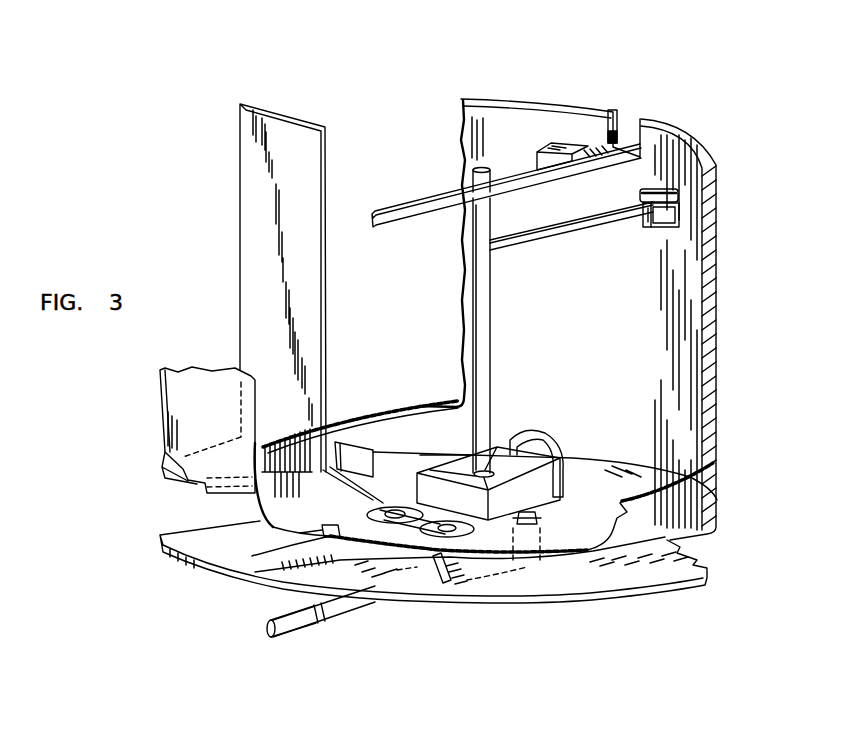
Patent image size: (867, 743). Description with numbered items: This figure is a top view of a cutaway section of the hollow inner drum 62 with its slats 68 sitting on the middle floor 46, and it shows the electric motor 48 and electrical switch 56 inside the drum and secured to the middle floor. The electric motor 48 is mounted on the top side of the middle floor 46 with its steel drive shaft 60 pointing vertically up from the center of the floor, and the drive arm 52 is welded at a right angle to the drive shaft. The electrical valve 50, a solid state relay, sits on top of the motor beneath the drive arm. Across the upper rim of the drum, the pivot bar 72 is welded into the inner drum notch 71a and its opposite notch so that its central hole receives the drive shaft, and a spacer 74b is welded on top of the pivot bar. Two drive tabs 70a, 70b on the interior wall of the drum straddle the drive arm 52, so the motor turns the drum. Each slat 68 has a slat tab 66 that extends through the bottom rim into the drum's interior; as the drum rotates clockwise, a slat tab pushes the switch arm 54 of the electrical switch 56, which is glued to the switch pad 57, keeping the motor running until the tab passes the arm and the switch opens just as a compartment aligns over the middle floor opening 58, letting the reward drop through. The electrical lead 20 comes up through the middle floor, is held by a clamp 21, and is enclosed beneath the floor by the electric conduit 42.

The electrical lead 20 is at (268, 618).
The clamp 21 is at (540, 517).
The electric conduit 42 is at (353, 611).
The middle floor 46 is at (160, 553).
The electric motor 48 is at (566, 494).
The electrical valve 50 is at (497, 445).
The drive arm 52 is at (590, 222).
The switch arm 54 is at (343, 498).
The electrical switch 56 is at (403, 491).
The switch pad 57 is at (490, 554).
The middle floor opening 58 is at (178, 498).
The drive shaft 60 is at (470, 183).
The hollow inner drum 62 is at (716, 285).
The slat tab 66 is at (358, 452).
The slat 68 is at (257, 151).
The drive tab 70a is at (670, 212).
The drive tab 70b is at (661, 190).
The inner drum notch 71a is at (619, 130).
The pivot bar 72 is at (409, 206).
The spacer 74b is at (546, 152).